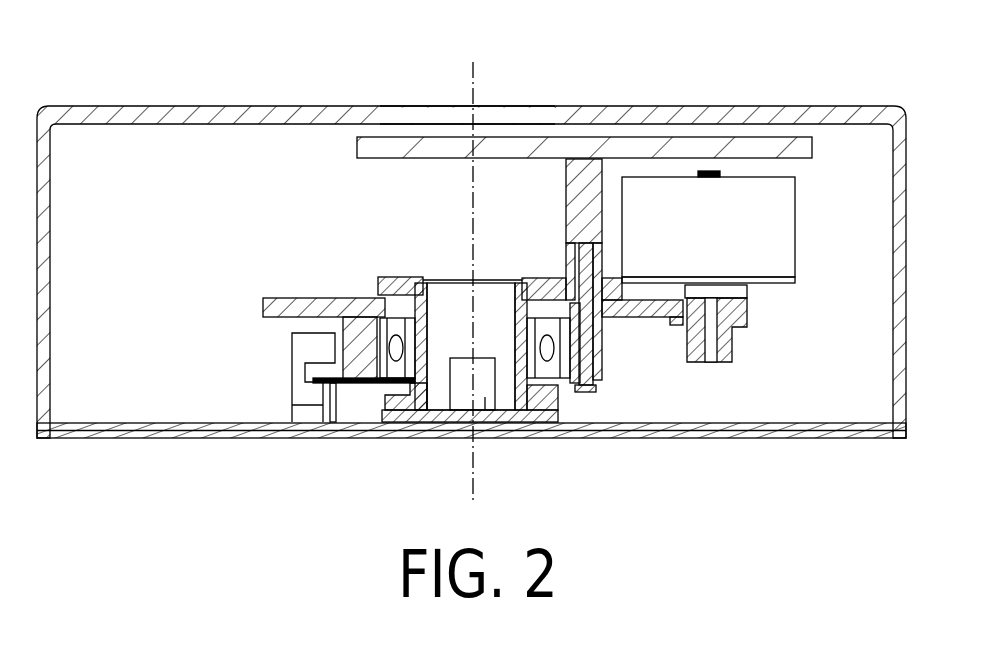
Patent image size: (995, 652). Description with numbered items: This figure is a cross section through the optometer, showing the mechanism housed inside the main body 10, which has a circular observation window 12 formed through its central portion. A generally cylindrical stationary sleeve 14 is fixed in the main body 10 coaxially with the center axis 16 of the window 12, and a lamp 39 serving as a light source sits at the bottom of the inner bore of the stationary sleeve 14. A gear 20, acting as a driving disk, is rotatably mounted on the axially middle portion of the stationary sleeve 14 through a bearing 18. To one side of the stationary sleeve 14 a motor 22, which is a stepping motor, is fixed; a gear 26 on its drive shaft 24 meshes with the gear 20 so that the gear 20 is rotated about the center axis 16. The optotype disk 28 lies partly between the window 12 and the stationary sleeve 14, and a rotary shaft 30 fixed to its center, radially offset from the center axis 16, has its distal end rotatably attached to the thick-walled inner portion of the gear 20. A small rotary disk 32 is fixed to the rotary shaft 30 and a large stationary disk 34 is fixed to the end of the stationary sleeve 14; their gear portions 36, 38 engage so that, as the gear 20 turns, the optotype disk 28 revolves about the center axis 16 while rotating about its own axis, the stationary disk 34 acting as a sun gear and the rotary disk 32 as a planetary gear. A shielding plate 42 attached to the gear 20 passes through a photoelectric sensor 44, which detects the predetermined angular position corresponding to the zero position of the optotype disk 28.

The main body 10 is at (805, 110).
The observation window 12 is at (560, 118).
The stationary sleeve 14 is at (422, 276).
The center axis 16 is at (471, 85).
The bearing 18 is at (383, 372).
The gear 20 is at (312, 296).
The motor 22 is at (773, 253).
The drive shaft 24 is at (712, 360).
The gear 26 is at (725, 350).
The optotype disk 28 is at (742, 148).
The rotary shaft 30 is at (568, 190).
The rotary disk 32 is at (570, 260).
The stationary disk 34 is at (393, 275).
The gear portion 36 is at (613, 318).
The gear portion 38 is at (542, 279).
The lamp 39 is at (485, 400).
The shielding plate 42 is at (330, 392).
The photoelectric sensor 44 is at (292, 377).